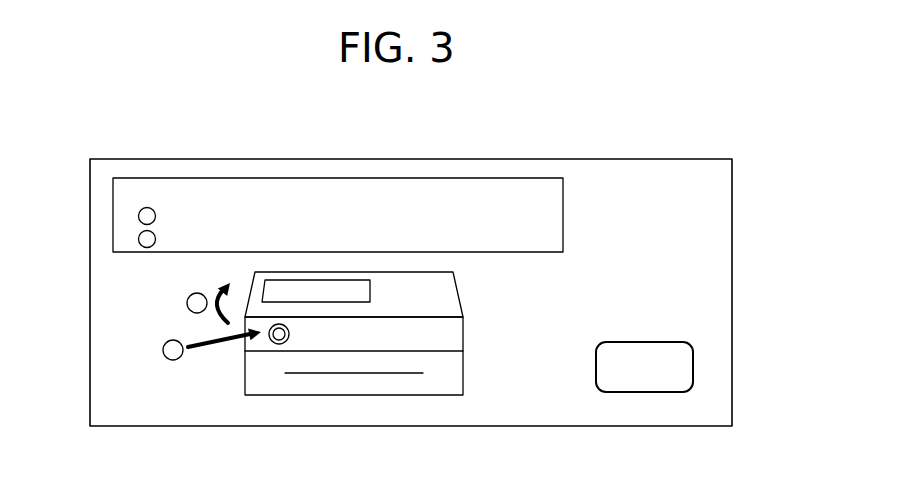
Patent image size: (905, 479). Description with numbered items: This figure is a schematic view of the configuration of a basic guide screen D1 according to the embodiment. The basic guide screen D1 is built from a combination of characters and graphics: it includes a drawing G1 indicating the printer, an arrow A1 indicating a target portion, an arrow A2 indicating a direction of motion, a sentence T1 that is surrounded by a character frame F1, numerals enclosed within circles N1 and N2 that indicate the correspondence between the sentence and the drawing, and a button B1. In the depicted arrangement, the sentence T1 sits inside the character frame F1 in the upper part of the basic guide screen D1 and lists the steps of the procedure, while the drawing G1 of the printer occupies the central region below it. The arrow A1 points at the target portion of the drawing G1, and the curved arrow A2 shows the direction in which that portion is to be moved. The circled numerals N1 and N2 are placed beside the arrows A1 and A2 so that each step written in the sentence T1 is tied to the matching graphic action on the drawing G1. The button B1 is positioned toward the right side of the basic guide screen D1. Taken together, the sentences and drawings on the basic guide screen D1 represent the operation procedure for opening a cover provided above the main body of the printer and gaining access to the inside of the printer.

The basic guide screen D1 is at (732, 195).
The character frame F1 is at (524, 178).
The sentence T1 is at (416, 192).
The drawing G1 is at (490, 384).
The button B1 is at (693, 367).
The numeral enclosed within circle N1 is at (163, 362).
The numeral enclosed within circle N2 is at (177, 300).
The arrow A1 is at (215, 346).
The arrow A2 is at (221, 319).